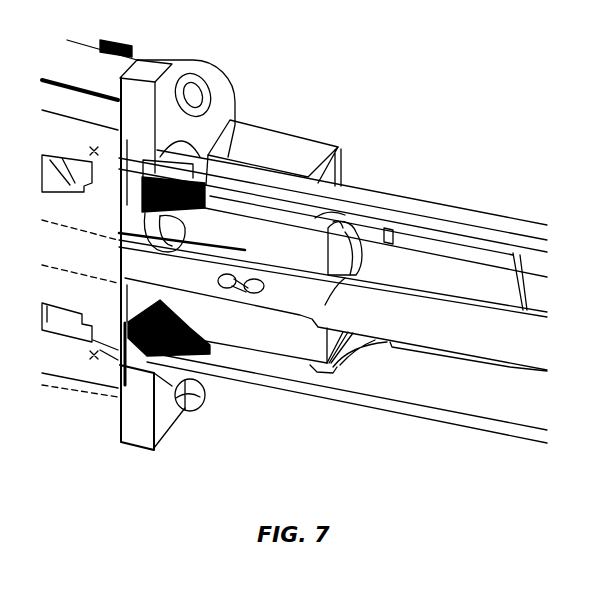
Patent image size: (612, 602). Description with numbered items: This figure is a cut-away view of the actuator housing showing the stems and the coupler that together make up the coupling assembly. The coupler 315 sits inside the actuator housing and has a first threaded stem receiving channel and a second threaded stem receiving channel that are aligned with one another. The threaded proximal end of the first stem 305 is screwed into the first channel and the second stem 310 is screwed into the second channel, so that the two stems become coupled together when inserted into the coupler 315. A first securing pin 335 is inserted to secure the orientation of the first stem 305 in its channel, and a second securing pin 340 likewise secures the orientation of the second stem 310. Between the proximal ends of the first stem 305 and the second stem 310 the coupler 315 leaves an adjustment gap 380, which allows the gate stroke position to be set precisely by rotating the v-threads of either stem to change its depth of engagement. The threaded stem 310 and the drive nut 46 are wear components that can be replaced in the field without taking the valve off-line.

The drive nut 46 is at (97, 192).
The first stem 305 is at (140, 258).
The second stem 310 is at (362, 235).
The first securing pin 335 is at (247, 263).
The second securing pin 340 is at (266, 282).
The coupler 315 is at (314, 242).
The adjustment gap 380 is at (241, 300).